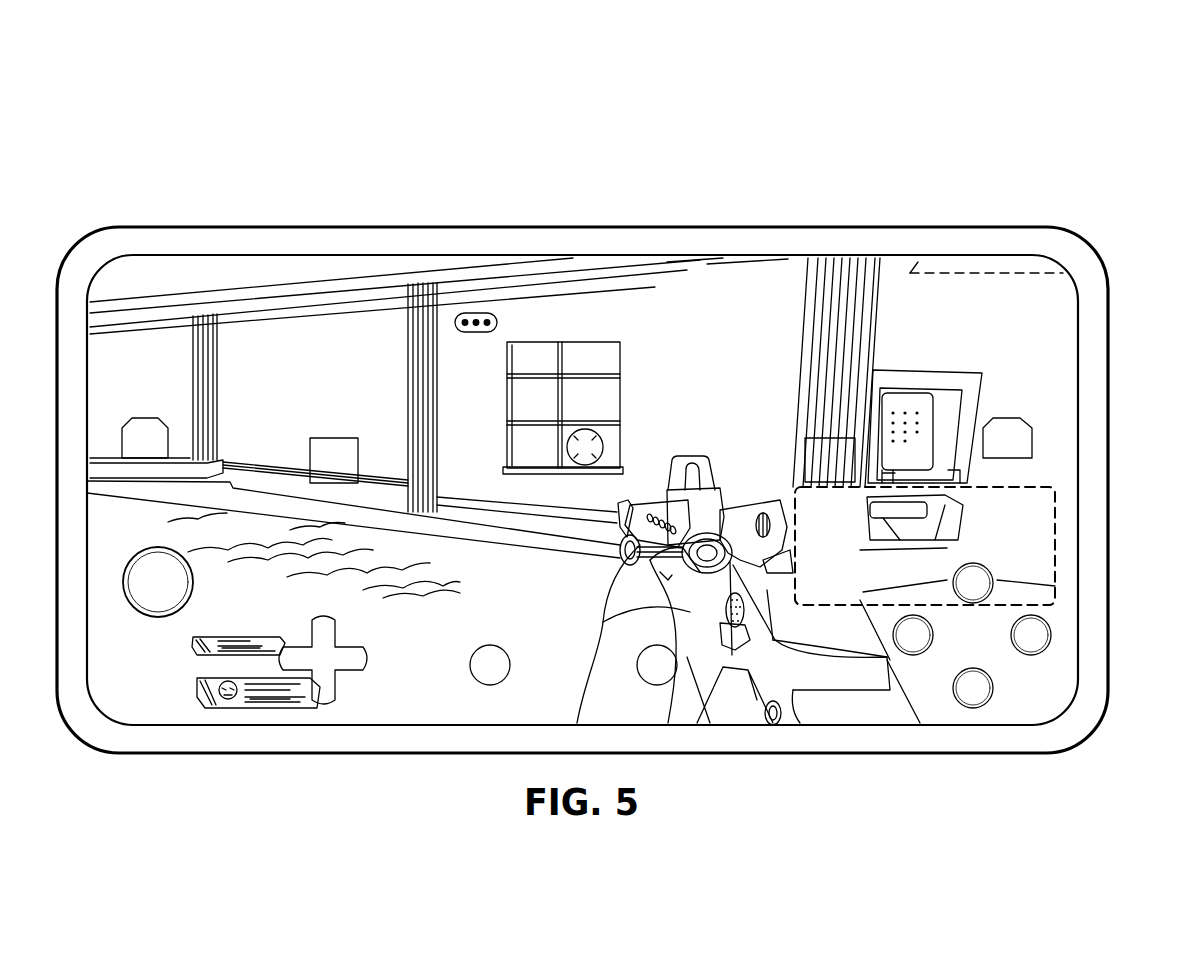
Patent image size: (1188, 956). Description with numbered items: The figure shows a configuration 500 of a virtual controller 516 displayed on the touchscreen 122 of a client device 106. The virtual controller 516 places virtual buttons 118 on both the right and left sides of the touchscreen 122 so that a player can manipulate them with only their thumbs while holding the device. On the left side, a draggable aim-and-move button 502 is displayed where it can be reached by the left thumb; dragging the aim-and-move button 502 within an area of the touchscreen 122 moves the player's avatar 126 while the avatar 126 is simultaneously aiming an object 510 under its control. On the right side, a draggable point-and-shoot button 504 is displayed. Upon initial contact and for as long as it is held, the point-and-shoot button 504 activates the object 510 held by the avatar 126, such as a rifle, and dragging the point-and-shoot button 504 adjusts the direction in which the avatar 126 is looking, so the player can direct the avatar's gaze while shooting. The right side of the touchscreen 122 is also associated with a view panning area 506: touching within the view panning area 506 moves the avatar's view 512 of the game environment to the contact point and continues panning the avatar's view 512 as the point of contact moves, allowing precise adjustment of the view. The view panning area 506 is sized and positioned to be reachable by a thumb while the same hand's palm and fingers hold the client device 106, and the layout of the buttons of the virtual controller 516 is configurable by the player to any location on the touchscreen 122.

The virtual controller 516 is at (217, 118).
The client device 106 is at (842, 230).
The display screen 500 is at (434, 227).
The touchscreen 122 is at (301, 272).
The avatar's view 512 is at (689, 311).
The aim-and-move button 502 is at (143, 416).
The point-and-shoot button 504 is at (1005, 416).
The view panning area 506 is at (1055, 532).
The virtual buttons 118 is at (195, 585).
The object 510 is at (603, 622).
The player's avatar 126 is at (598, 687).